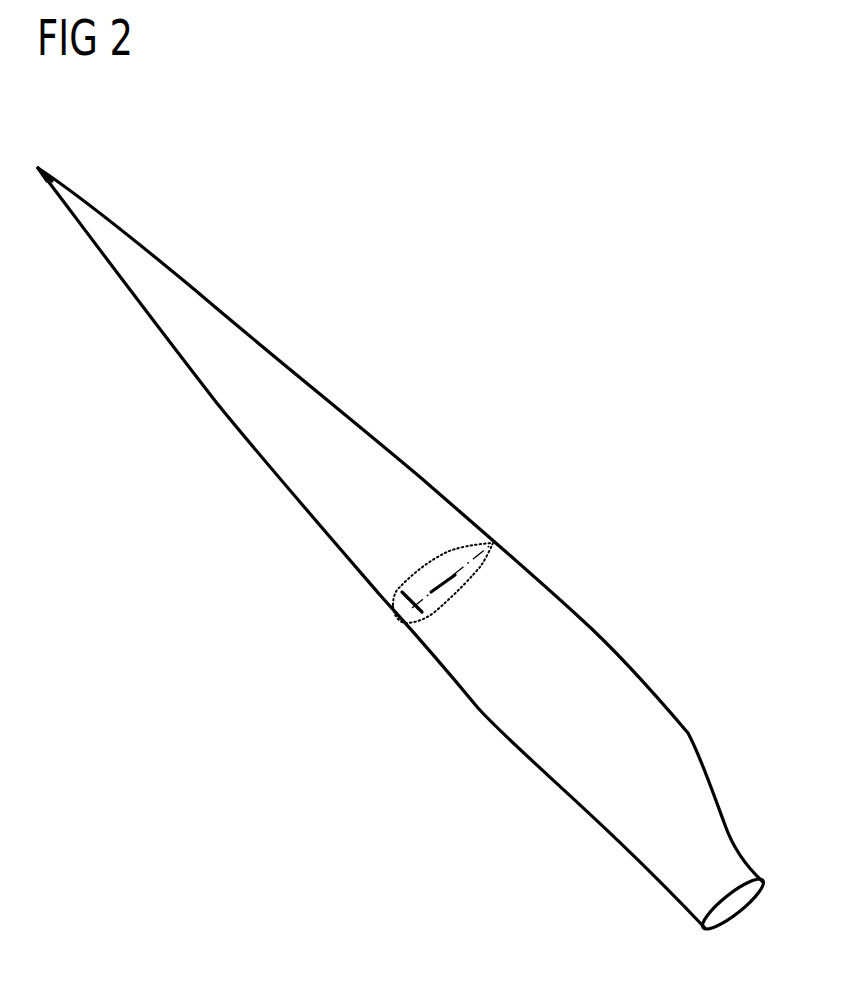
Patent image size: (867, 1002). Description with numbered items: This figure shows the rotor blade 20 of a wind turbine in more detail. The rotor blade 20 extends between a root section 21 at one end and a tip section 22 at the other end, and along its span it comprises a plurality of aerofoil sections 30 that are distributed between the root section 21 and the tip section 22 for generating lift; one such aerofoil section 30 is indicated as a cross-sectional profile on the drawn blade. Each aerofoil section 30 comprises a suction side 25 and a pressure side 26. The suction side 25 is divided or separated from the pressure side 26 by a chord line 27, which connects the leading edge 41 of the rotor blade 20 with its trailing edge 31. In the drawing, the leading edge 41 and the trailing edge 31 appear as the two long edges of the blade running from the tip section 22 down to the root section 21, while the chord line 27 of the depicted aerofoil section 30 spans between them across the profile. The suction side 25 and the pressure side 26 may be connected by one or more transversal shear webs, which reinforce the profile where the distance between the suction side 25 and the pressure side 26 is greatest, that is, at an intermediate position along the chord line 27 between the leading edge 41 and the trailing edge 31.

The rotor blade 20 is at (412, 515).
The root section 21 is at (732, 868).
The tip section 22 is at (38, 167).
The suction side 25 is at (443, 558).
The pressure side 26 is at (465, 580).
The chord line 27 is at (435, 588).
The aerofoil section 30 is at (469, 528).
The trailing edge 31 is at (620, 653).
The leading edge 41 is at (478, 708).